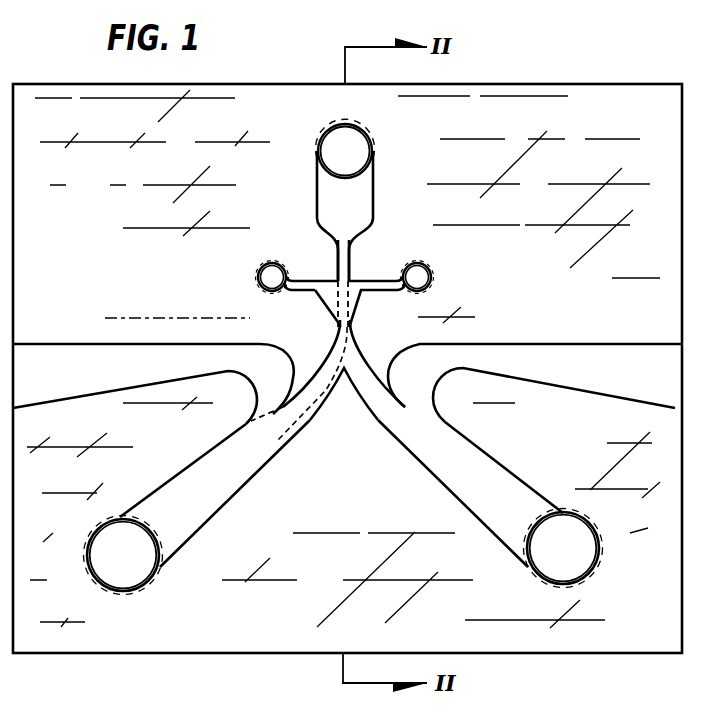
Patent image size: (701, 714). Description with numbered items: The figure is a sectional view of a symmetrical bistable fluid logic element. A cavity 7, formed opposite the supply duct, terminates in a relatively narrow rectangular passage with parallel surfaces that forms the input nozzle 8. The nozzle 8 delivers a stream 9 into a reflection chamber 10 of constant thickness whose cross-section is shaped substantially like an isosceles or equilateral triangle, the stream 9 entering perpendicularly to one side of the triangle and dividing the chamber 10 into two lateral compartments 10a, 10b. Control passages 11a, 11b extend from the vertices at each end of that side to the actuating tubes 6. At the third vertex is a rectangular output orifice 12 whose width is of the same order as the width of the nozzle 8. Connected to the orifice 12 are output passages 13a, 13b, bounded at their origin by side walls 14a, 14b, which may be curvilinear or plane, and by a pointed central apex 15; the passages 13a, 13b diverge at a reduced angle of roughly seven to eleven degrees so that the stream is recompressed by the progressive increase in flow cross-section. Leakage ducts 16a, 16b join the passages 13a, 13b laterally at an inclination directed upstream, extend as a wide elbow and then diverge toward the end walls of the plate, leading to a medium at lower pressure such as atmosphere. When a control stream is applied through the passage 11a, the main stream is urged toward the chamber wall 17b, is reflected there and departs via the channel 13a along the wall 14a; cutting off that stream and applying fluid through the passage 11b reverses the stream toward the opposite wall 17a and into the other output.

The actuating tube 6 is at (263, 266).
The cavity 7 is at (358, 193).
The input nozzle 8 is at (353, 250).
The stream 9 is at (334, 313).
The reflection chamber 10 is at (323, 278).
The lateral compartment 10a is at (320, 297).
The lateral compartment 10b is at (364, 293).
The control passage 11a is at (282, 293).
The control passage 11b is at (391, 282).
The output orifice 12 is at (333, 334).
The output passage 13a is at (257, 458).
The output passage 13b is at (425, 458).
The side wall 14a is at (320, 362).
The side wall 14b is at (393, 366).
The pointed central apex 15 is at (345, 373).
The leakage duct 16a is at (83, 396).
The leakage duct 16b is at (543, 384).
The chamber wall 17a is at (337, 325).
The chamber wall 17b is at (352, 326).